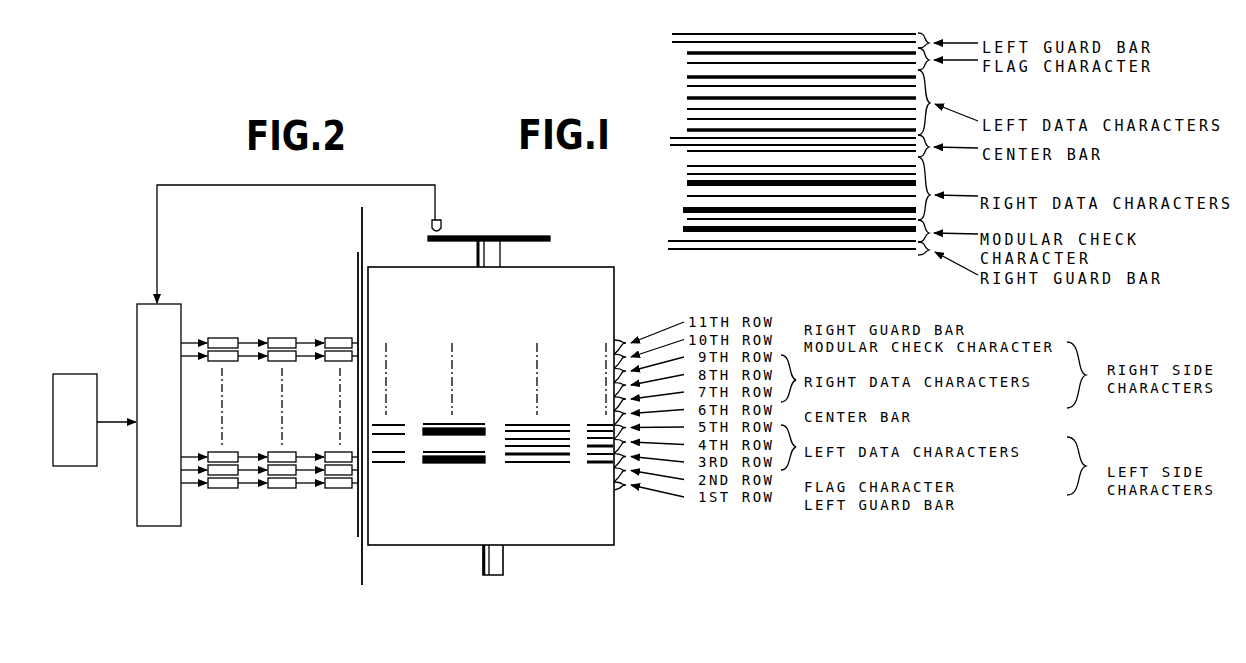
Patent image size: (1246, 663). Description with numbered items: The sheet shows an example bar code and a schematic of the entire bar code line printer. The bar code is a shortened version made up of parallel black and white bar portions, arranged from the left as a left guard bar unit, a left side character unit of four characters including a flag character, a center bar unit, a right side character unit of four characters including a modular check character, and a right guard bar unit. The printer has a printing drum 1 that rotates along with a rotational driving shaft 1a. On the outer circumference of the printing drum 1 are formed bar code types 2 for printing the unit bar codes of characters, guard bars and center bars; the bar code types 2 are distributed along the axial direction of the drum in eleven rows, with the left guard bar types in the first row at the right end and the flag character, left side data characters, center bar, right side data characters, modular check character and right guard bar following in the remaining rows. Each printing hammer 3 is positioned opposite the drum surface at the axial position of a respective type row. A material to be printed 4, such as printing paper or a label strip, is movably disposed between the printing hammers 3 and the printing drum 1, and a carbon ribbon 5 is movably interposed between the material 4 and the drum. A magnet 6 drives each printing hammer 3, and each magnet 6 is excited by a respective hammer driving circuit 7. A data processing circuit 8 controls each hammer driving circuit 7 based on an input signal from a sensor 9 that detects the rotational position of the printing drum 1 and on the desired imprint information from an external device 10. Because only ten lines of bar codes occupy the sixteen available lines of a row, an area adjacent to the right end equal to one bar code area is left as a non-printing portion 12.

In FIG. 1, the printing drum 1 is at (592, 550).
In FIG. 1, the rotational driving shaft 1a is at (503, 562).
In FIG. 1, the bar code types 2 is at (492, 464).
In FIG. 2, the printing hammer 3 is at (340, 344).
In FIG. 1, the material to be printed 4 is at (358, 531).
In FIG. 1, the carbon ribbon 5 is at (363, 568).
In FIG. 2, the magnet 6 is at (283, 344).
In FIG. 2, the hammer driving circuit 7 is at (232, 344).
In FIG. 2, the data processing circuit 8 is at (158, 526).
In FIG. 1, the sensor 9 is at (442, 229).
In FIG. 2, the external device 10 is at (77, 466).
In FIG. 1, the non-printing portion 12 is at (395, 443).